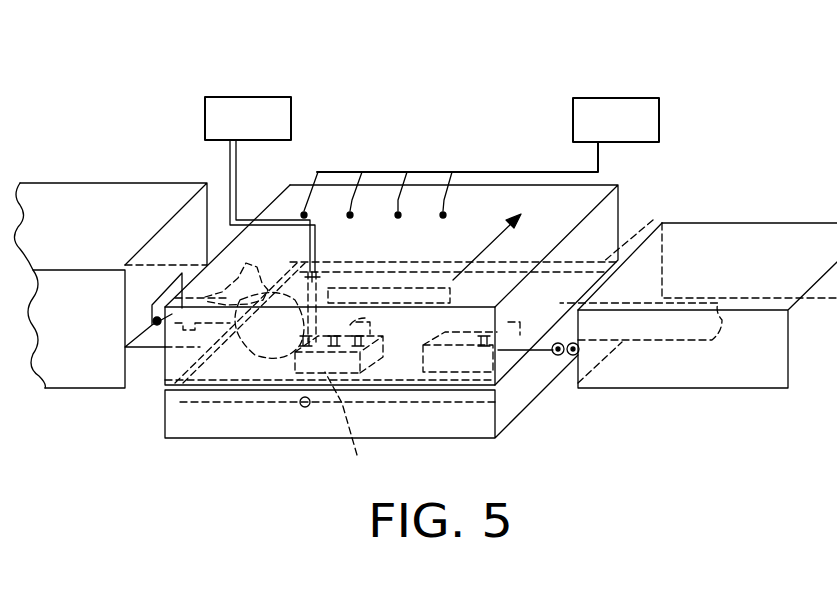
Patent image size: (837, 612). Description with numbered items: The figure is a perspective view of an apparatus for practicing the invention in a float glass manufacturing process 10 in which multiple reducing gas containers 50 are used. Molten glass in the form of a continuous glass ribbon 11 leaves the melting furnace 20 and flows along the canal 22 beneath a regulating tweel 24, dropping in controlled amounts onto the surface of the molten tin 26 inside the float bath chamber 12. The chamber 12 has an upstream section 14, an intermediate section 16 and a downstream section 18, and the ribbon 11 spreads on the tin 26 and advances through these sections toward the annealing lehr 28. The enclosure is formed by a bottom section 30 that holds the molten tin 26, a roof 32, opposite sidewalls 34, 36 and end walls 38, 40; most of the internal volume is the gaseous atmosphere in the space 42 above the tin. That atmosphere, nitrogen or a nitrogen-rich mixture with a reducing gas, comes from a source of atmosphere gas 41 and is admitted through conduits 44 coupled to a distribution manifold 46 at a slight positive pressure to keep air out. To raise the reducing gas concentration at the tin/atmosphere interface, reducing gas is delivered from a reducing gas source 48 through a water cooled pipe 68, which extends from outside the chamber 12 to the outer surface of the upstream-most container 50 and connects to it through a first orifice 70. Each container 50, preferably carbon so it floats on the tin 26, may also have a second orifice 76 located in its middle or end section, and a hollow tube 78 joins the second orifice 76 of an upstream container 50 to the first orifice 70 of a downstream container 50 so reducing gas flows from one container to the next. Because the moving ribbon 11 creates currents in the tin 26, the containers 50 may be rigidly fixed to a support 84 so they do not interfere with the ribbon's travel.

The float glass manufacturing process 10 is at (503, 78).
The glass ribbon 11 is at (405, 360).
The float bath chamber 12 is at (222, 372).
The upstream section 14 is at (262, 275).
The intermediate section 16 is at (412, 260).
The downstream section 18 is at (655, 214).
The melting furnace 20 is at (60, 197).
The canal 22 is at (157, 322).
The regulating tweel 24 is at (195, 265).
The molten tin 26 is at (385, 372).
The annealing lehr 28 is at (733, 232).
The bottom section 30 is at (188, 412).
The roof 32 is at (593, 195).
The sidewall 34 is at (330, 212).
The sidewall 36 is at (477, 372).
The end wall 38 is at (270, 213).
The end wall 40 is at (608, 219).
The source of atmosphere gas 41 is at (616, 120).
The space 42 is at (487, 247).
The conduit 44 is at (446, 198).
The distribution manifold 46 is at (430, 173).
The reducing gas source 48 is at (248, 118).
The reducing gas container 50 is at (373, 344).
The water cooled pipe 68 is at (233, 162).
The first orifice 70 is at (308, 337).
The second orifice 76 is at (367, 324).
The hollow tube 78 is at (455, 292).
The support 84 is at (308, 413).